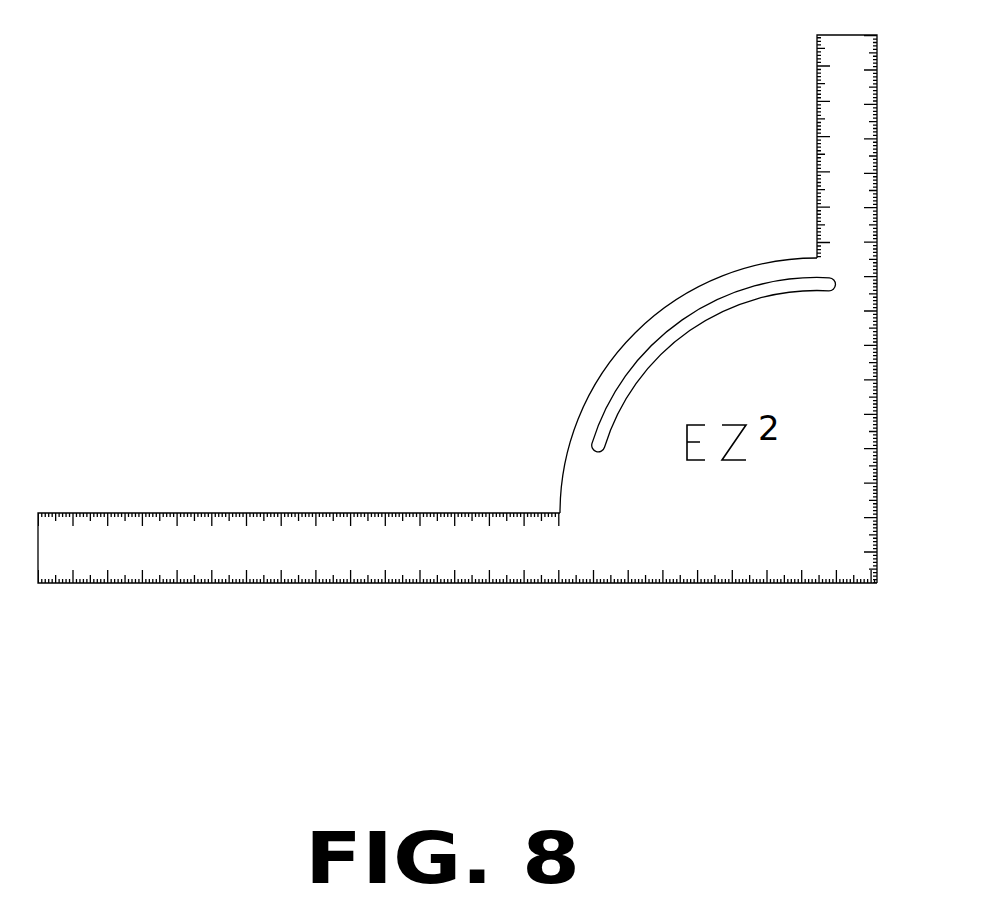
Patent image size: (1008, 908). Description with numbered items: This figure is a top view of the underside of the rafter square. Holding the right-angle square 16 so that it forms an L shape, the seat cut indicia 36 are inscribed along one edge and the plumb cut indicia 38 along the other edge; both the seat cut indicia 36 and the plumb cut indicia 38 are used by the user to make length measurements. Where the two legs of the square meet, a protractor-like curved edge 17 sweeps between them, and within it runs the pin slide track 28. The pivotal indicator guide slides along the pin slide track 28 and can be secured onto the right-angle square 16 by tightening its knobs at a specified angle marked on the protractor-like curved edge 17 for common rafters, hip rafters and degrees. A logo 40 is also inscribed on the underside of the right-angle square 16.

The right-angle square 16 is at (462, 550).
The protractor-like curved edge 17 is at (590, 388).
The pin slide track 28 is at (722, 307).
The seat cut indicia 36 is at (190, 555).
The plumb cut indicia 38 is at (840, 102).
The logo 40 is at (470, 625).